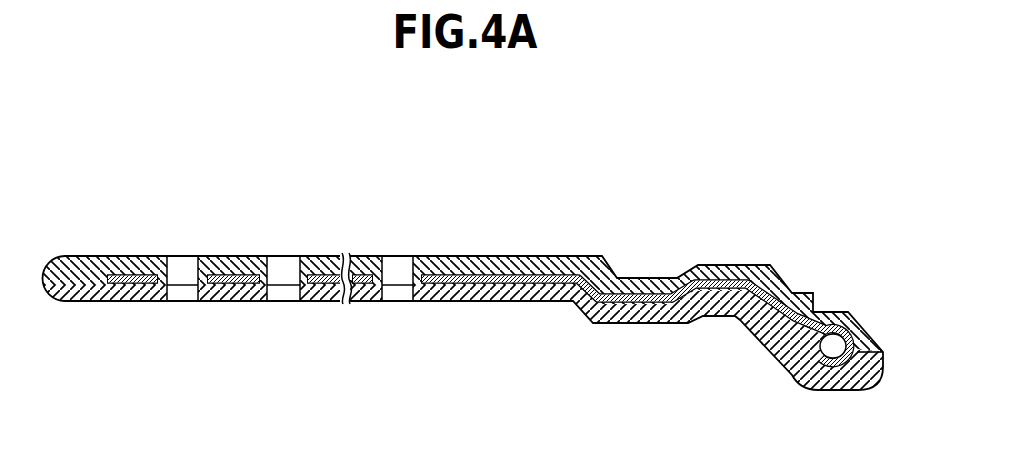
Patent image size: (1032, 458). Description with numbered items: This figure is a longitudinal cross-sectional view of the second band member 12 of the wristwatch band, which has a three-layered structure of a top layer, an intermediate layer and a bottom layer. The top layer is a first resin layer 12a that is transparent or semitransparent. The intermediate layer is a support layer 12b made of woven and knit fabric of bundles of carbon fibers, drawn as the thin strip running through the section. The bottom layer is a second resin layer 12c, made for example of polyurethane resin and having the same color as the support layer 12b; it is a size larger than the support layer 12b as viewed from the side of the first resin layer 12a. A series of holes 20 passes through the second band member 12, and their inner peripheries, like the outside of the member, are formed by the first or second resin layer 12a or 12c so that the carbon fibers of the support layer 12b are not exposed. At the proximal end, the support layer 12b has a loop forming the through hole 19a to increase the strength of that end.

The second band member 12 is at (472, 245).
The first resin layer 12a is at (505, 270).
The support layer 12b is at (530, 271).
The second resin layer 12c is at (488, 293).
The holes 20 is at (169, 282).
The through hole 19a is at (836, 352).